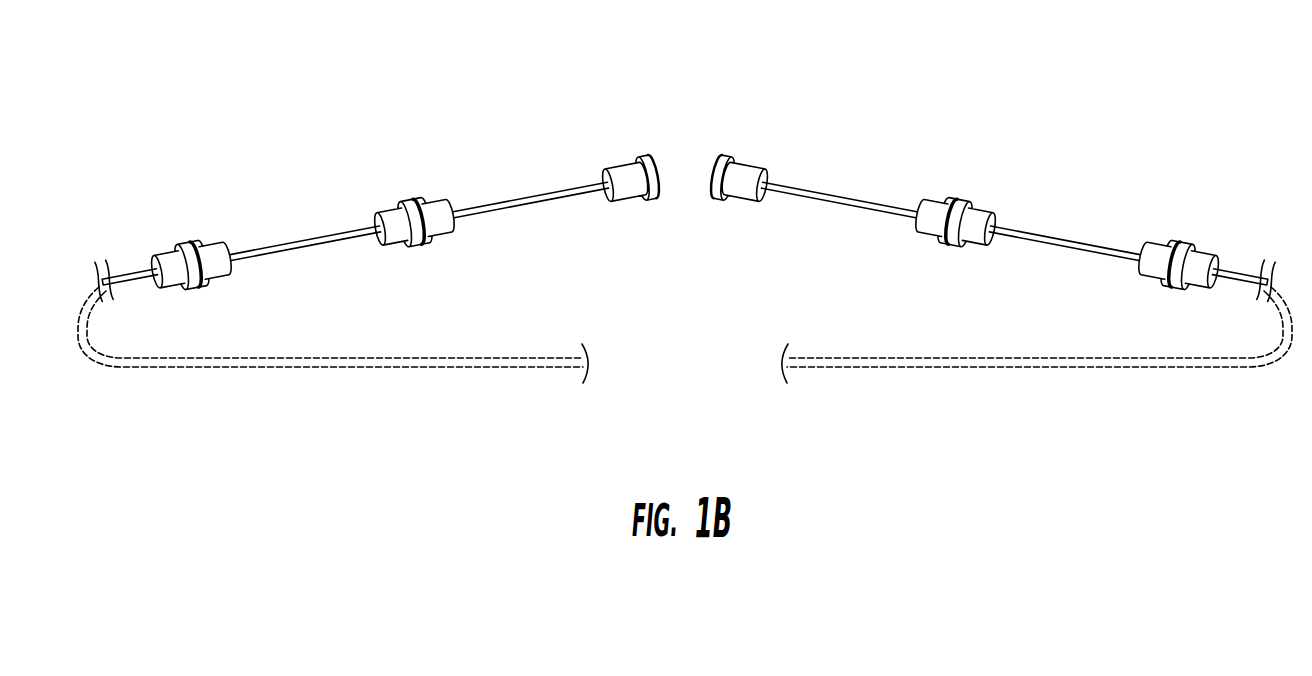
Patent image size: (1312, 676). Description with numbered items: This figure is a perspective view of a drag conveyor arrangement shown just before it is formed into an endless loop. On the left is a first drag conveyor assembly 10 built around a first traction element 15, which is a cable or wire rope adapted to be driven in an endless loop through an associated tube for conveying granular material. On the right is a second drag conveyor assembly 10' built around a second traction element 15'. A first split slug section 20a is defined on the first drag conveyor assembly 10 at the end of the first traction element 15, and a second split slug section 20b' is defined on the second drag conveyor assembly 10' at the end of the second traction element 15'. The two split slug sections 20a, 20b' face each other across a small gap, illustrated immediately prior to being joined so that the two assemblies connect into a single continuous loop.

The drag conveyor assembly 10 is at (333, 257).
The traction element 15 is at (355, 195).
The first split slug section 20a is at (630, 163).
The second drag conveyor assembly 10' is at (1037, 277).
The second traction element 15' is at (1014, 227).
The second split slug section 20b' is at (767, 153).